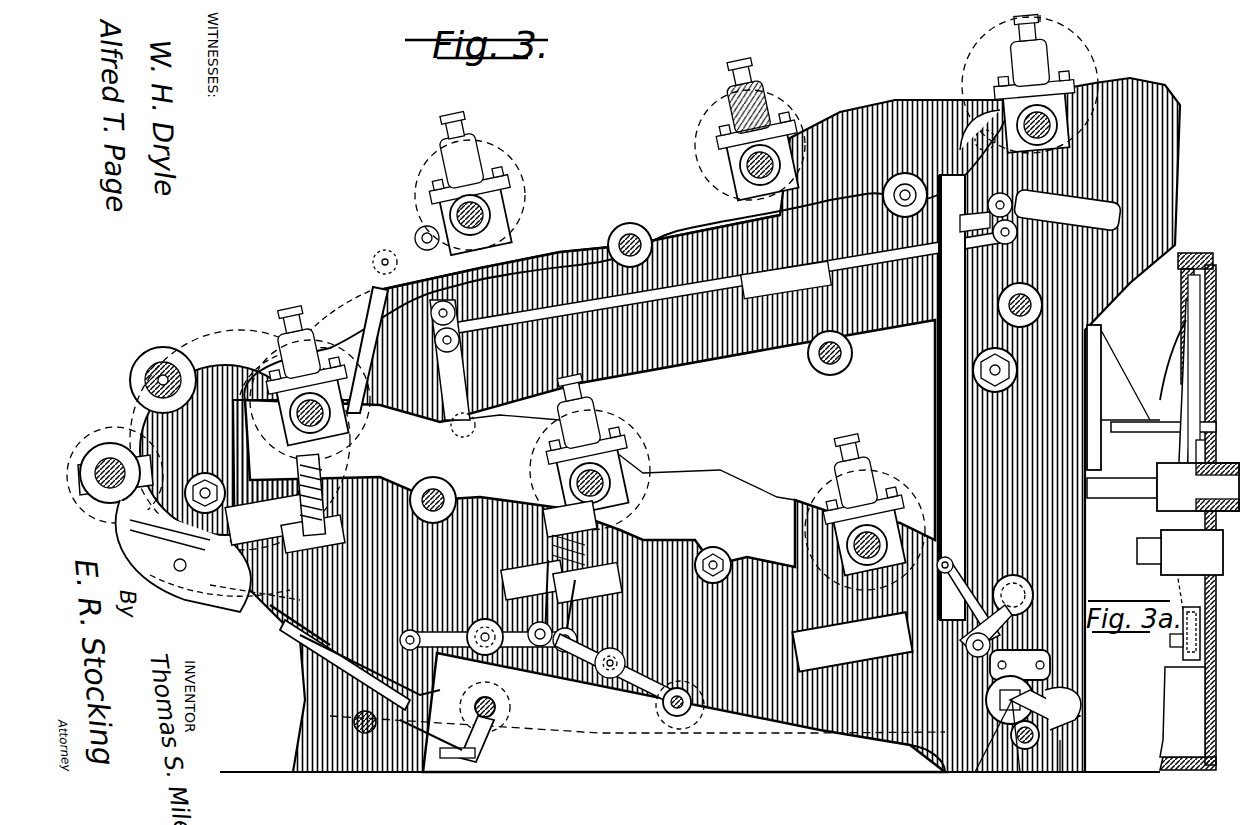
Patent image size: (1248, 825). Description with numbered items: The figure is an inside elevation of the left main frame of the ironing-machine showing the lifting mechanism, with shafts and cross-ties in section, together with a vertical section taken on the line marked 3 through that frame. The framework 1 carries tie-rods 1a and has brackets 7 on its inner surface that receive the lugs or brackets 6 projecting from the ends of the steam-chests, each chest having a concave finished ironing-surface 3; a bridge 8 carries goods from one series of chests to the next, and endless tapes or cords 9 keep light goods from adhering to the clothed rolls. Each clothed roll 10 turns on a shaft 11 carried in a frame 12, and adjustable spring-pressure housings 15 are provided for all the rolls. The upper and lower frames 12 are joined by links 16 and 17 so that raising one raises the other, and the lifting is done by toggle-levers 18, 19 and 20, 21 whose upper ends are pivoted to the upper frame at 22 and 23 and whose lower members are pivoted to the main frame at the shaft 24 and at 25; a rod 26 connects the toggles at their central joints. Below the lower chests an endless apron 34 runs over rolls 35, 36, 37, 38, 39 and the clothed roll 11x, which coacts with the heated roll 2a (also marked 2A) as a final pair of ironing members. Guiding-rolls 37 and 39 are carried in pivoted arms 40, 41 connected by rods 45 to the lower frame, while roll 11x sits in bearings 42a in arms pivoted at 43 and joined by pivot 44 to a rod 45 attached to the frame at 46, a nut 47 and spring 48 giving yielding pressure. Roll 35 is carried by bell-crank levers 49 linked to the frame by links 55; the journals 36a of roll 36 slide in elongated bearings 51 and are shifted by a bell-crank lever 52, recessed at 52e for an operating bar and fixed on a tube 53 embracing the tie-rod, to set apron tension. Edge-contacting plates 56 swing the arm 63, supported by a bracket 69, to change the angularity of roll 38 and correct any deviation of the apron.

In FIG. 3, the framework 1 is at (226, 395).
In FIG. 3A, the framework 1 is at (1216, 690).
In FIG. 3, the tie-rod 1a is at (352, 722).
In FIG. 3, the heated ironing-roll 2a is at (172, 345).
In FIG. 3, the heated ironing-roll 2A is at (1042, 308).
In FIG. 3, the concave upper finished ironing-surface 3 is at (1000, 80).
In FIG. 3A, the bracket 6 is at (1123, 397).
In FIG. 3A, the bracket 7 is at (1165, 445).
In FIG. 3, the bridge 8 is at (1058, 773).
In FIG. 3, the endless tape or cord 9 is at (306, 342).
In FIG. 3, the roll 10 is at (522, 165).
In FIG. 3, the shaft 11 is at (492, 216).
In FIG. 3, the clothed roll 11x is at (110, 445).
In FIG. 3, the frame 12 is at (627, 338).
In FIG. 3, the adjustable spring-pressure housing 15 is at (480, 165).
In FIG. 3, the link 16 is at (372, 292).
In FIG. 3, the link 17 is at (940, 425).
In FIG. 3A, the link 17 is at (1175, 365).
In FIG. 3, the toggle-lever 18 is at (1006, 246).
In FIG. 3A, the toggle-lever 18 is at (1210, 450).
In FIG. 3, the toggle-lever 19 is at (1068, 210).
In FIG. 3A, the toggle-lever 19 is at (1205, 360).
In FIG. 3, the toggle-lever 20 is at (450, 360).
In FIG. 3, the toggle-lever 21 is at (445, 256).
In FIG. 3, the pivot 22 is at (962, 108).
In FIG. 3, the pivot 23 is at (420, 234).
In FIG. 3A, the pivot shaft 24 is at (1188, 561).
In FIG. 3, the pivot 25 is at (478, 425).
In FIG. 3, the rod 26 is at (720, 284).
In FIG. 3, the endless apron 34 is at (637, 712).
In FIG. 3, the apron-guiding roll 35 is at (985, 598).
In FIG. 3, the apron-guiding roll 36 is at (1020, 665).
In FIG. 3, the journal 36a is at (915, 758).
In FIG. 3, the guiding-roll 37 is at (660, 708).
In FIG. 3, the guide and directing roll 38 is at (496, 707).
In FIG. 3, the guiding-roll 39 is at (479, 647).
In FIG. 3, the arm 40 is at (620, 671).
In FIG. 3, the arm 41 is at (488, 650).
In FIG. 3, the bearing 42a is at (120, 505).
In FIG. 3, the pivot 43 is at (225, 587).
In FIG. 3, the pivot 44 is at (275, 615).
In FIG. 3, the link or rod 45 is at (423, 577).
In FIG. 3, the connection 46 is at (467, 503).
In FIG. 3, the nut 47 is at (476, 583).
In FIG. 3, the spring 48 is at (270, 519).
In FIG. 3, the bell-crank lever 49 is at (986, 631).
In FIG. 3, the elongated bearing 51 is at (1050, 690).
In FIG. 3, the bell-crank lever 52 is at (987, 749).
In FIG. 3, the recess 52e is at (1068, 690).
In FIG. 3, the tube 53 is at (1040, 735).
In FIG. 3, the link 55 is at (852, 641).
In FIG. 3, the edge-contacting plate 56 is at (292, 640).
In FIG. 3, the arm 63 is at (310, 655).
In FIG. 3, the bracket 69 is at (480, 755).